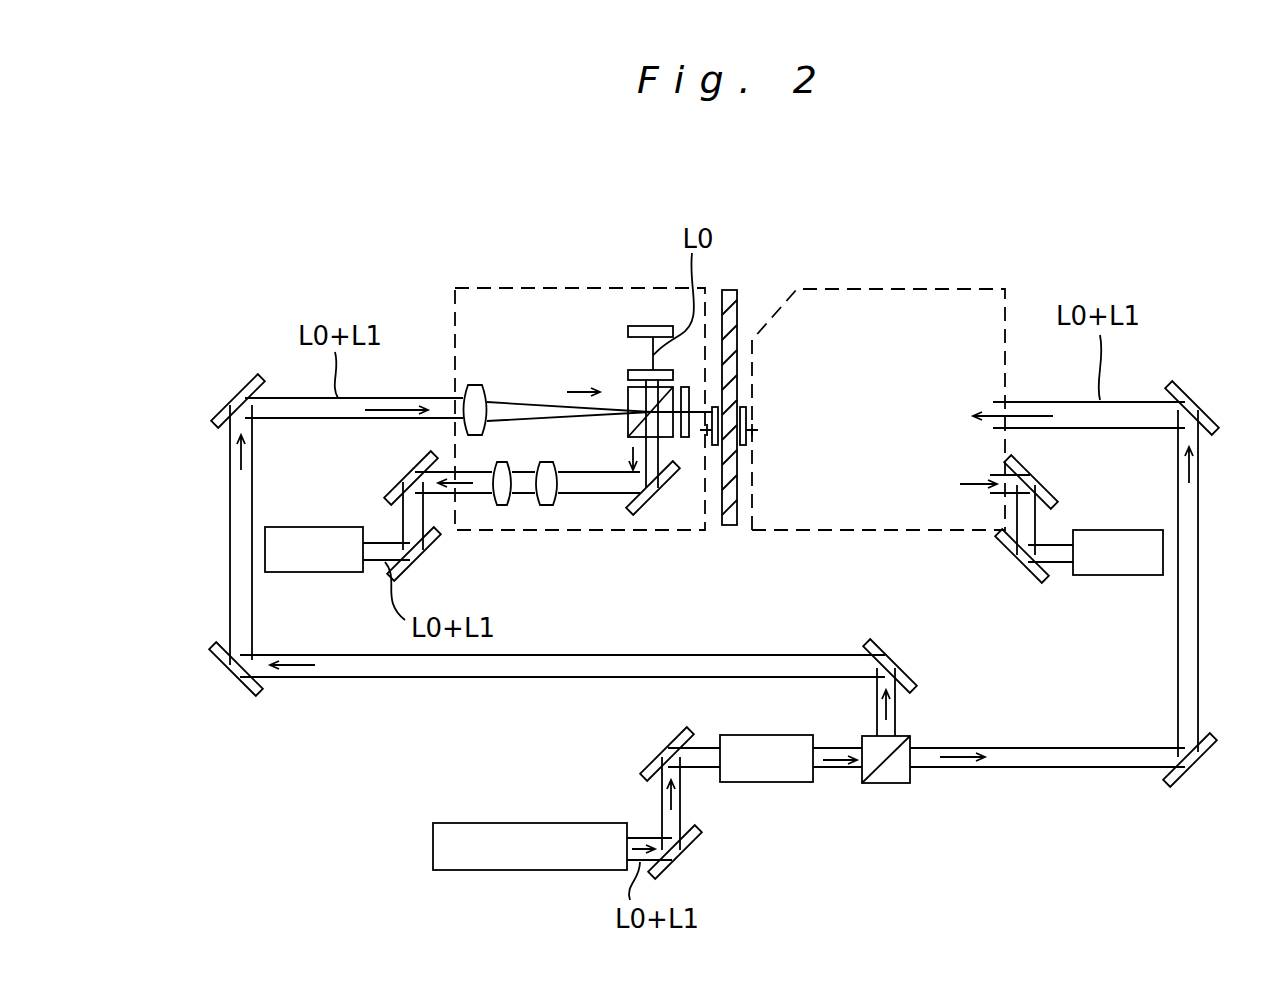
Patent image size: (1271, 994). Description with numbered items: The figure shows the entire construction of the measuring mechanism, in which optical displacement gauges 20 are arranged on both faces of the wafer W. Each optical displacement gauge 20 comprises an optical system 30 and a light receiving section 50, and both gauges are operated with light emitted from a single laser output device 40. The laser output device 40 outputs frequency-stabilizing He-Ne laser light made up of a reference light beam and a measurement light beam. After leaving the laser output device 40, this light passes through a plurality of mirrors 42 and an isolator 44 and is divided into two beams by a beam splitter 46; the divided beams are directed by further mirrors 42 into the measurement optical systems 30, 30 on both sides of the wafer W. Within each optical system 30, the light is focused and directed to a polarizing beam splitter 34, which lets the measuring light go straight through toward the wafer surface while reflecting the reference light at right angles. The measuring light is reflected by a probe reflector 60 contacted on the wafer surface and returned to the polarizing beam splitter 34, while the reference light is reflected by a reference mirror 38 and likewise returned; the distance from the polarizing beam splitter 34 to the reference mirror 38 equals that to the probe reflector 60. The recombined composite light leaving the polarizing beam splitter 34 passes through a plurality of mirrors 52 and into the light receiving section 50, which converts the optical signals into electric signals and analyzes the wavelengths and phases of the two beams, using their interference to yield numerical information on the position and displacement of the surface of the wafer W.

The optical displacement gauge 20 is at (433, 259).
The optical system 30 is at (567, 288).
The polarizing beam splitter 34 is at (623, 395).
The reference mirror 38 is at (650, 325).
The laser output device 40 is at (497, 838).
The mirror 42 is at (227, 400).
The isolator 44 is at (775, 768).
The beam splitter 46 is at (888, 778).
The light receiving section 50 is at (323, 560).
The mirror 52 is at (400, 478).
The probe reflector 60 is at (713, 405).
The wafer W is at (722, 524).